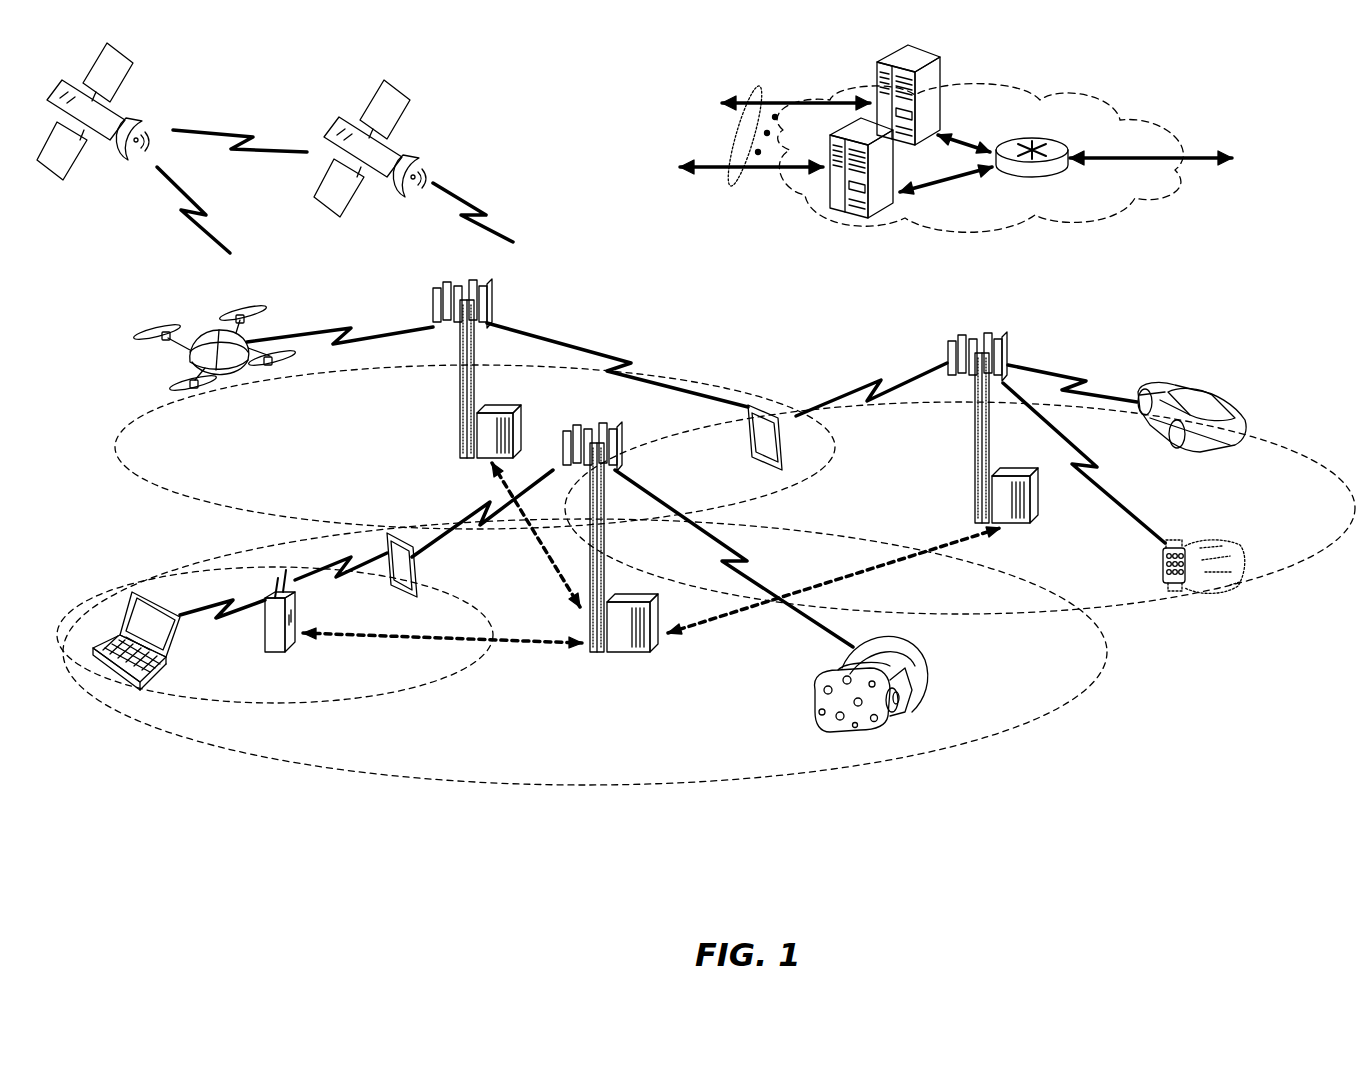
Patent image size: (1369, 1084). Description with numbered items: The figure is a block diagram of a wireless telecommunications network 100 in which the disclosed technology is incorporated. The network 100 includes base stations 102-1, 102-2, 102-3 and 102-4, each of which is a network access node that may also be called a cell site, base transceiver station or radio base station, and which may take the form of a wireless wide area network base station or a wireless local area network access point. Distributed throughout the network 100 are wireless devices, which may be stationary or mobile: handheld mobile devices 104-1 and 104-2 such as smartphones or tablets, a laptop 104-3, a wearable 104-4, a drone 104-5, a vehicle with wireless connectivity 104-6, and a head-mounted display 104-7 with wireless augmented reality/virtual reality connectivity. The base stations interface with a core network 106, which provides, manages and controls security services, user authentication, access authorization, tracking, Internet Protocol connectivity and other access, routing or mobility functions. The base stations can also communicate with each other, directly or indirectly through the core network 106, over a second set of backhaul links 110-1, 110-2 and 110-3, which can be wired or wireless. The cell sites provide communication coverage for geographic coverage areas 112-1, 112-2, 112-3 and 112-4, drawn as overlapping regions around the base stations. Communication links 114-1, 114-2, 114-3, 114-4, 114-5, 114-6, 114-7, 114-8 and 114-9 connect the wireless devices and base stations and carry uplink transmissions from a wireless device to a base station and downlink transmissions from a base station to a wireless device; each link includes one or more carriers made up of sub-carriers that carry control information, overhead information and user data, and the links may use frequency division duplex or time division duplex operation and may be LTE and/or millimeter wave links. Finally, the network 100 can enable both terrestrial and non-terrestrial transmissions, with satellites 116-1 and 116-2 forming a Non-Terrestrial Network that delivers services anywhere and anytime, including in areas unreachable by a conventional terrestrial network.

The wireless telecommunications network 100 is at (1300, 115).
The base station 102-1 is at (591, 656).
The base station 102-2 is at (460, 420).
The base station 102-3 is at (975, 458).
The base station 102-4 is at (265, 645).
The handheld mobile device 104-1 is at (420, 572).
The handheld mobile device 104-2 is at (746, 452).
The laptop 104-3 is at (120, 686).
The wearable 104-4 is at (1175, 548).
The drone 104-5 is at (228, 384).
The vehicle with wireless connectivity 104-6 is at (1216, 398).
The head-mounted display 104-7 is at (920, 670).
The core network 106 is at (1074, 232).
The backhaul link 110-1 is at (340, 645).
The backhaul link 110-2 is at (895, 570).
The backhaul link 110-3 is at (553, 575).
The geographic coverage area 112-1 is at (521, 786).
The geographic coverage area 112-2 is at (401, 703).
The geographic coverage area 112-3 is at (162, 520).
The geographic coverage area 112-4 is at (1283, 444).
The communication link 114-1 is at (758, 570).
The communication link 114-2 is at (483, 517).
The communication link 114-3 is at (222, 620).
The communication link 114-4 is at (340, 590).
The communication link 114-5 is at (337, 326).
The communication link 114-6 is at (626, 366).
The communication link 114-7 is at (868, 386).
The communication link 114-8 is at (1108, 492).
The communication link 114-9 is at (1072, 380).
The satellite 116-1 is at (142, 124).
The satellite 116-2 is at (420, 165).